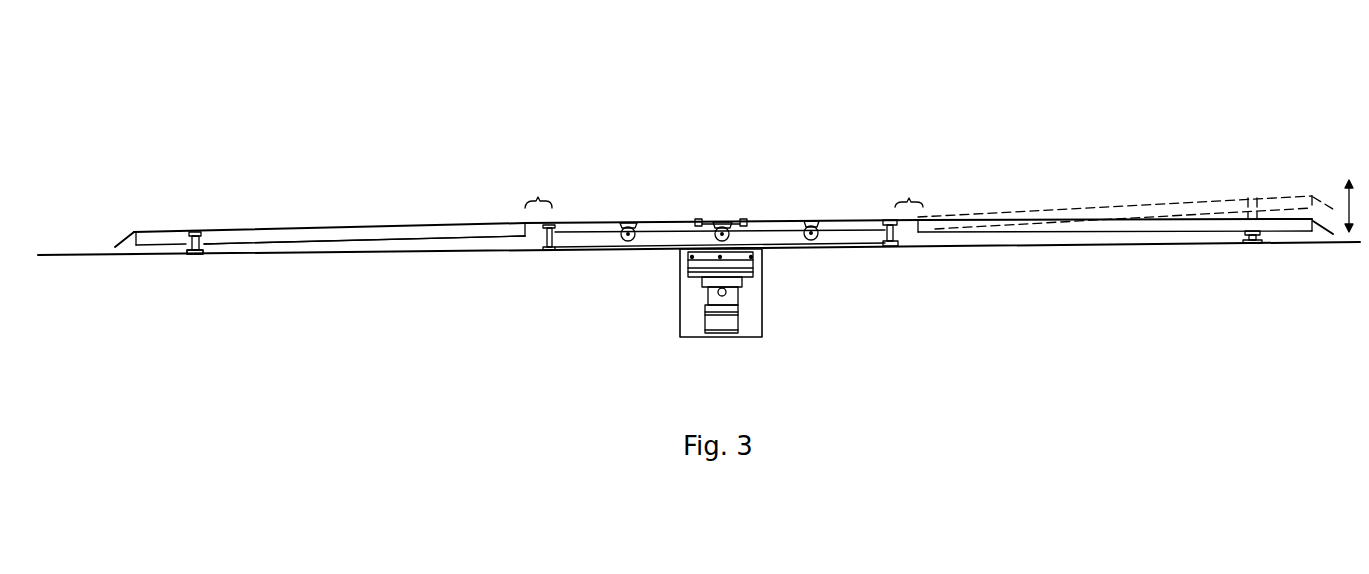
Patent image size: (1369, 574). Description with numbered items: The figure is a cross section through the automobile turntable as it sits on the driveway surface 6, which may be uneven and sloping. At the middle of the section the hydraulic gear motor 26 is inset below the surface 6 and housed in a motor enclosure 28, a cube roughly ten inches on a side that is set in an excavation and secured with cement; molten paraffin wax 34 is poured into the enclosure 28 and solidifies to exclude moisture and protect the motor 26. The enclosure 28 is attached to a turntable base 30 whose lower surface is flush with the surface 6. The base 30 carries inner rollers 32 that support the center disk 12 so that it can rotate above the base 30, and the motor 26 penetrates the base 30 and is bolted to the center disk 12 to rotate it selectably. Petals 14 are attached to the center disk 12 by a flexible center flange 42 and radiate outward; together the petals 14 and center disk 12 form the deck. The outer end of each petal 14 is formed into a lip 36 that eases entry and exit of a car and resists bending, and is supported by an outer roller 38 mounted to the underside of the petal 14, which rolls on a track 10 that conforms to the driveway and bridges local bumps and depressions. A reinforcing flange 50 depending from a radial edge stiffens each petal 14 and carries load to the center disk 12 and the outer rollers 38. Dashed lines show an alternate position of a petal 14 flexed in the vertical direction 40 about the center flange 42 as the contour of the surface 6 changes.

The surface 6 is at (63, 255).
The track 10 is at (193, 254).
The center disk 12 is at (661, 222).
The petal 14 is at (358, 228).
The hydraulic gear motor 26 is at (727, 273).
The motor enclosure 28 is at (762, 308).
The turntable base 30 is at (547, 253).
The inner rollers 32 is at (895, 242).
The paraffin wax 34 is at (695, 297).
The lip 36 is at (123, 239).
The outer roller 38 is at (187, 247).
The vertical direction 40 is at (1343, 180).
The center flange 42 is at (539, 192).
The reinforcing flange 50 is at (413, 236).